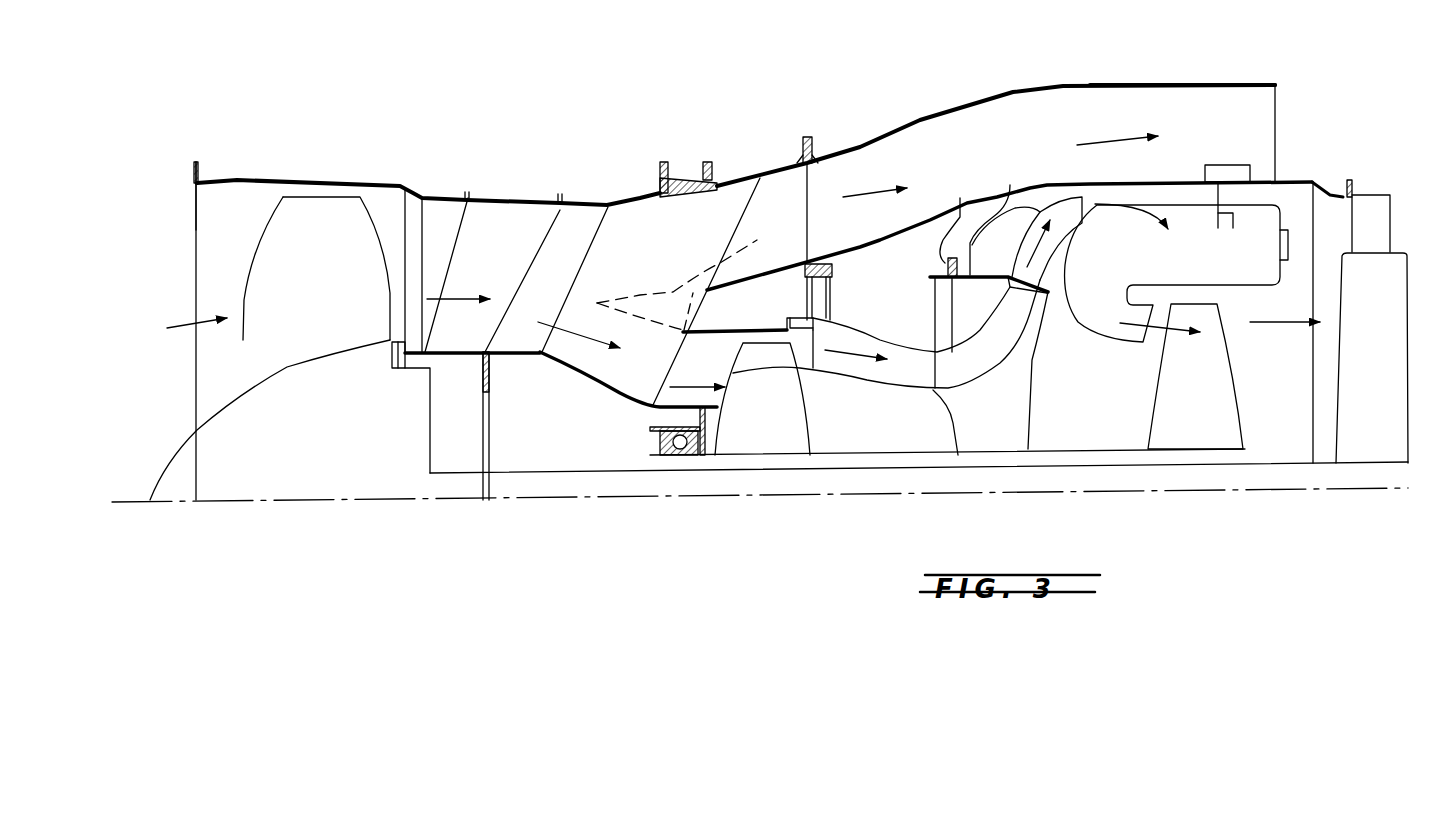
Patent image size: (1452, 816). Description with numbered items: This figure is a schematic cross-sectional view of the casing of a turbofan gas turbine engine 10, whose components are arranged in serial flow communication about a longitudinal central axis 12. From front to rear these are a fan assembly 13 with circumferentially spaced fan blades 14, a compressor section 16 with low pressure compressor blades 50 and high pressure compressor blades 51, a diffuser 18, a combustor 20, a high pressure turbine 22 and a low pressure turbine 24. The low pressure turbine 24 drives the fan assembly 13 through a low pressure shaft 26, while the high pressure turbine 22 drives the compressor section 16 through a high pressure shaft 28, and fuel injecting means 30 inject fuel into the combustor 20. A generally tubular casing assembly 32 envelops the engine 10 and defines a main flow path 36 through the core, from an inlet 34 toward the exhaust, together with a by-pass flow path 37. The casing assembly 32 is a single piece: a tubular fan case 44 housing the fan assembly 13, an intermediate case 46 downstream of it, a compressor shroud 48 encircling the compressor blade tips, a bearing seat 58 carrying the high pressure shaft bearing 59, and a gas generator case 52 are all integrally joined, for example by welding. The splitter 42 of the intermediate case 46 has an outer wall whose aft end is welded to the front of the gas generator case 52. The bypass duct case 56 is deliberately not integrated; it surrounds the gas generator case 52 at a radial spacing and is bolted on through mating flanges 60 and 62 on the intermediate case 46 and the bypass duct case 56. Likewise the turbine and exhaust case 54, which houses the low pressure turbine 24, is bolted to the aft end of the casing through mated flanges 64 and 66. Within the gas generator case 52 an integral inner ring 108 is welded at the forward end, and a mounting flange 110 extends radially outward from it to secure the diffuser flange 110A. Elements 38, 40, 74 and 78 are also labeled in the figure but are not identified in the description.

The turbofan gas turbine engine 10 is at (293, 142).
The longitudinal central axis 12 is at (298, 504).
The fan assembly 13 is at (185, 457).
The fan blades 14 is at (323, 293).
The compressor section 16 is at (783, 445).
The diffuser 18 is at (1008, 292).
The combustor 20 is at (1160, 267).
The high pressure turbine 22 is at (1205, 403).
The low pressure turbine 24 is at (1390, 398).
The low pressure shaft 26 is at (1270, 462).
The high pressure shaft 28 is at (1088, 449).
The fuel injecting means 30 is at (1224, 162).
The casing assembly 32 is at (588, 156).
The inlet 34 is at (197, 220).
The main flow path 36 is at (180, 323).
The by-pass flow path 37 is at (873, 192).
The fan exit guide vane 38 is at (506, 267).
The stator vane 40 is at (682, 252).
The splitter 42 is at (954, 256).
The fan case 44 is at (403, 187).
The intermediate case 46 is at (727, 166).
The compressor shroud 48 is at (740, 327).
The low pressure compressor blades 50 is at (765, 343).
The high pressure compressor blades 51 is at (947, 372).
The gas generator case 52 is at (1050, 177).
The turbine and exhaust case 54 is at (1372, 193).
The bypass duct case 56 is at (1190, 84).
The bearing seat 58 is at (703, 433).
The HP shaft bearing 59 is at (663, 437).
The mating flange 60 is at (803, 140).
The mating flange 62 is at (811, 140).
The mated flange 64 is at (1345, 192).
The mated flange 66 is at (1362, 180).
The flange 74 is at (682, 166).
The gearbox housing 78 is at (480, 373).
The inner ring 108 is at (917, 223).
The mounting flange 110 is at (961, 198).
The diffuser flange 110A is at (1013, 184).